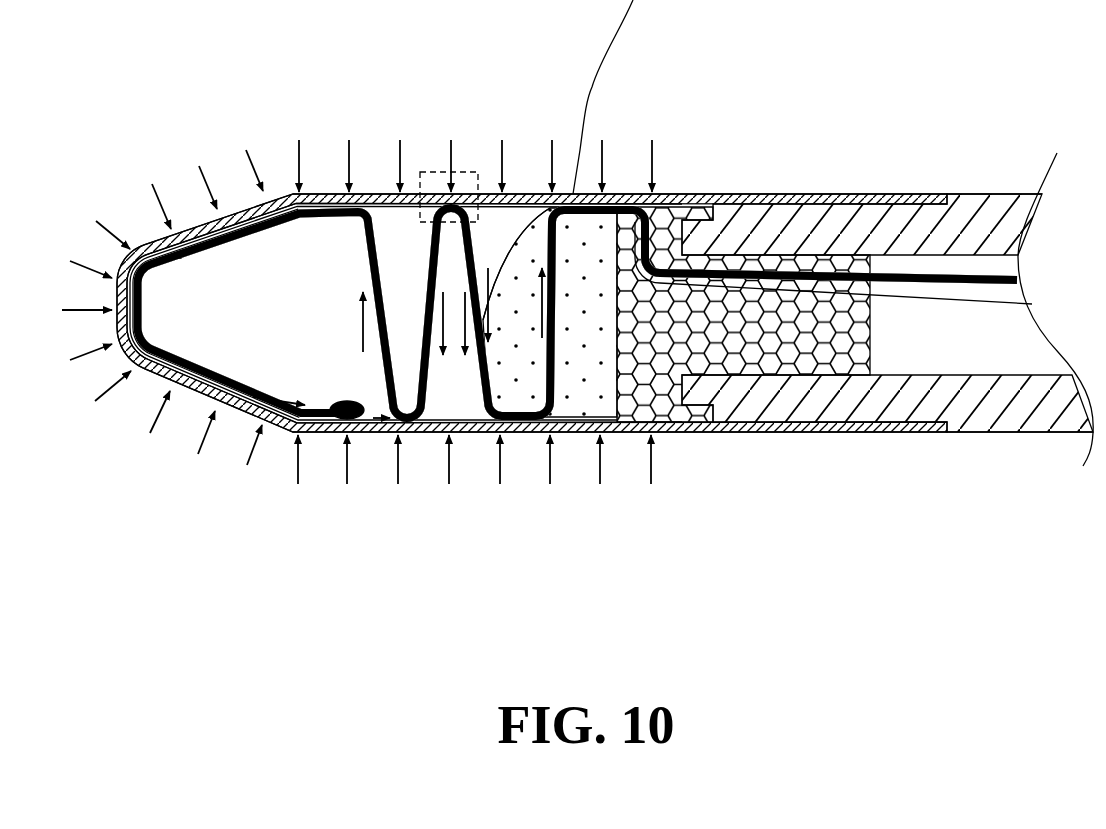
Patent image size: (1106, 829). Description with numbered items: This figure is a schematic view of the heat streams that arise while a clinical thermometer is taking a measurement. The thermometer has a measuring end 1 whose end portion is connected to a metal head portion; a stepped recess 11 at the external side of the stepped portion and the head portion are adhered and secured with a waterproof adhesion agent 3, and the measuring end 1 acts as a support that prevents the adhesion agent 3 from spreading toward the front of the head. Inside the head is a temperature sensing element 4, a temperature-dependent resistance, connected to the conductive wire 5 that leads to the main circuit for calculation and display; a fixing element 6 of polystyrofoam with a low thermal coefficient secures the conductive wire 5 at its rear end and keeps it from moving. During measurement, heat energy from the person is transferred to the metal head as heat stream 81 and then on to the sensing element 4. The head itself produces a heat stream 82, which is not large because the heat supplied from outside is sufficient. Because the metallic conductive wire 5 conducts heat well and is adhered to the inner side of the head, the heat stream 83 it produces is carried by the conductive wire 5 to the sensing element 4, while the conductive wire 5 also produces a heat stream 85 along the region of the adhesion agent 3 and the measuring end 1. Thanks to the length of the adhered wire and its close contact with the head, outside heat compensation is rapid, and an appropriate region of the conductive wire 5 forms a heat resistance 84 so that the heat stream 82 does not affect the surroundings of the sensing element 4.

The measuring end 1 is at (985, 432).
The adhesion agent 3 is at (662, 432).
The temperature sensing element 4 is at (337, 425).
The conductive wire 5 is at (240, 405).
The fixing element 6 is at (580, 410).
The stepped recess 11 is at (700, 194).
The heat stream 81 is at (348, 158).
The heat stream 82 is at (375, 415).
The heat stream 83 is at (363, 320).
The heat resistance 84 is at (465, 180).
The heat stream 85 is at (490, 305).